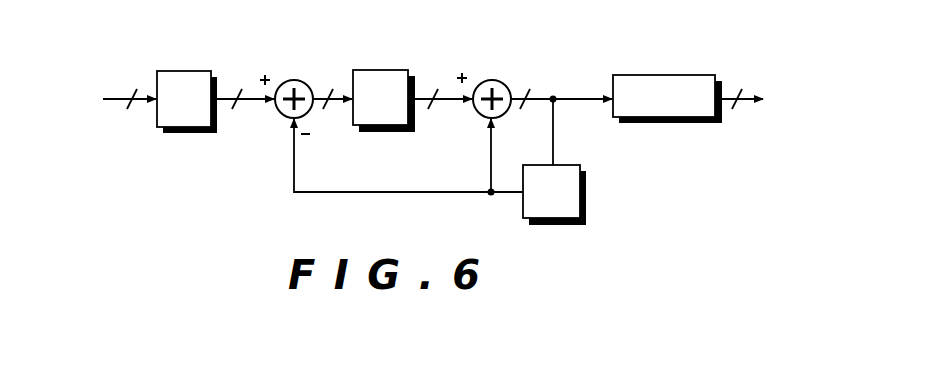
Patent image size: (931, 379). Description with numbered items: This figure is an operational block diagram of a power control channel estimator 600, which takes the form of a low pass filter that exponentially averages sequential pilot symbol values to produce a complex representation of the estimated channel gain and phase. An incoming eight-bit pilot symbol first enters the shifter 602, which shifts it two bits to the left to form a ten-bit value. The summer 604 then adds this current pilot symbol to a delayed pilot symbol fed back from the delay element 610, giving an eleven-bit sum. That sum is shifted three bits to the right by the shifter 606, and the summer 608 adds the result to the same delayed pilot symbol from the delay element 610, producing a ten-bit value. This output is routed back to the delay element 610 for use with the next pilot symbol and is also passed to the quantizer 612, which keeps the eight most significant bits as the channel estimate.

The power control channel estimator 600 is at (194, 227).
The shifter 602 is at (190, 70).
The summer 604 is at (292, 78).
The shifter 606 is at (387, 70).
The summer 608 is at (490, 79).
The delay element 610 is at (558, 222).
The quantizer 612 is at (658, 75).